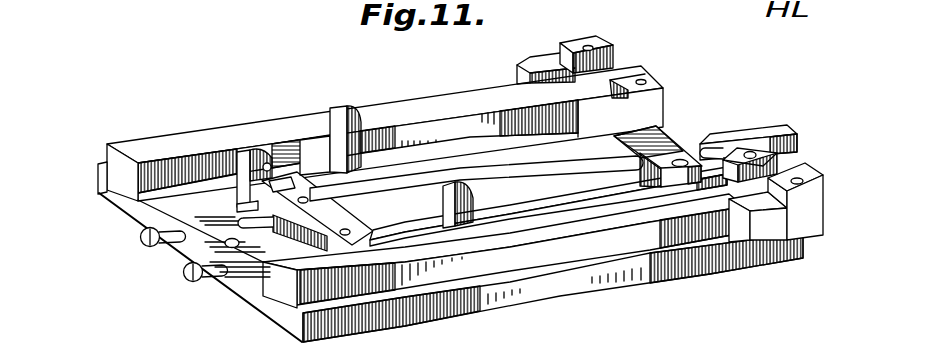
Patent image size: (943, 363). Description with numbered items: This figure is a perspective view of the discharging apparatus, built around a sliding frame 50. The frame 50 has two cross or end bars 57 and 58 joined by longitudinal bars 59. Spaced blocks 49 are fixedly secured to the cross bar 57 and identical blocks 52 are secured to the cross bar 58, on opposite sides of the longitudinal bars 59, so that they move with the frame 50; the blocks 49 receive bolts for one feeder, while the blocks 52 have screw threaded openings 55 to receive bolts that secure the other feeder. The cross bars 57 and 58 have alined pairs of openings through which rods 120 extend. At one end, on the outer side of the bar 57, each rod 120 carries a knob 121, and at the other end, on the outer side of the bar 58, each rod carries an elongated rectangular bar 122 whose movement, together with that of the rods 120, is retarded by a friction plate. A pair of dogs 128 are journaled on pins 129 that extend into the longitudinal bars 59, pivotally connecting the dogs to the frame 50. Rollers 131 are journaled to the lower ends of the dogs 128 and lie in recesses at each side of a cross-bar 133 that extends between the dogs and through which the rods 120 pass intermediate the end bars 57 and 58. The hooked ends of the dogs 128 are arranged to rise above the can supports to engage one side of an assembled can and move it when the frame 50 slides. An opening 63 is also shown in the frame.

The blocks 49 is at (733, 140).
The sliding frame 50 is at (667, 273).
The blocks 52 is at (608, 47).
The screw threaded openings 55 is at (602, 21).
The cross bar 57 is at (110, 188).
The cross bar 58 is at (660, 133).
The longitudinal bars 59 is at (422, 107).
The hole 63 is at (241, 248).
The rods 120 is at (540, 216).
The knobs 121 is at (177, 277).
The elongated rectangular bars 122 is at (790, 167).
The dogs 128 is at (362, 88).
The pins 129 is at (268, 164).
The rollers 131 is at (247, 177).
The cross-bar 133 is at (320, 210).